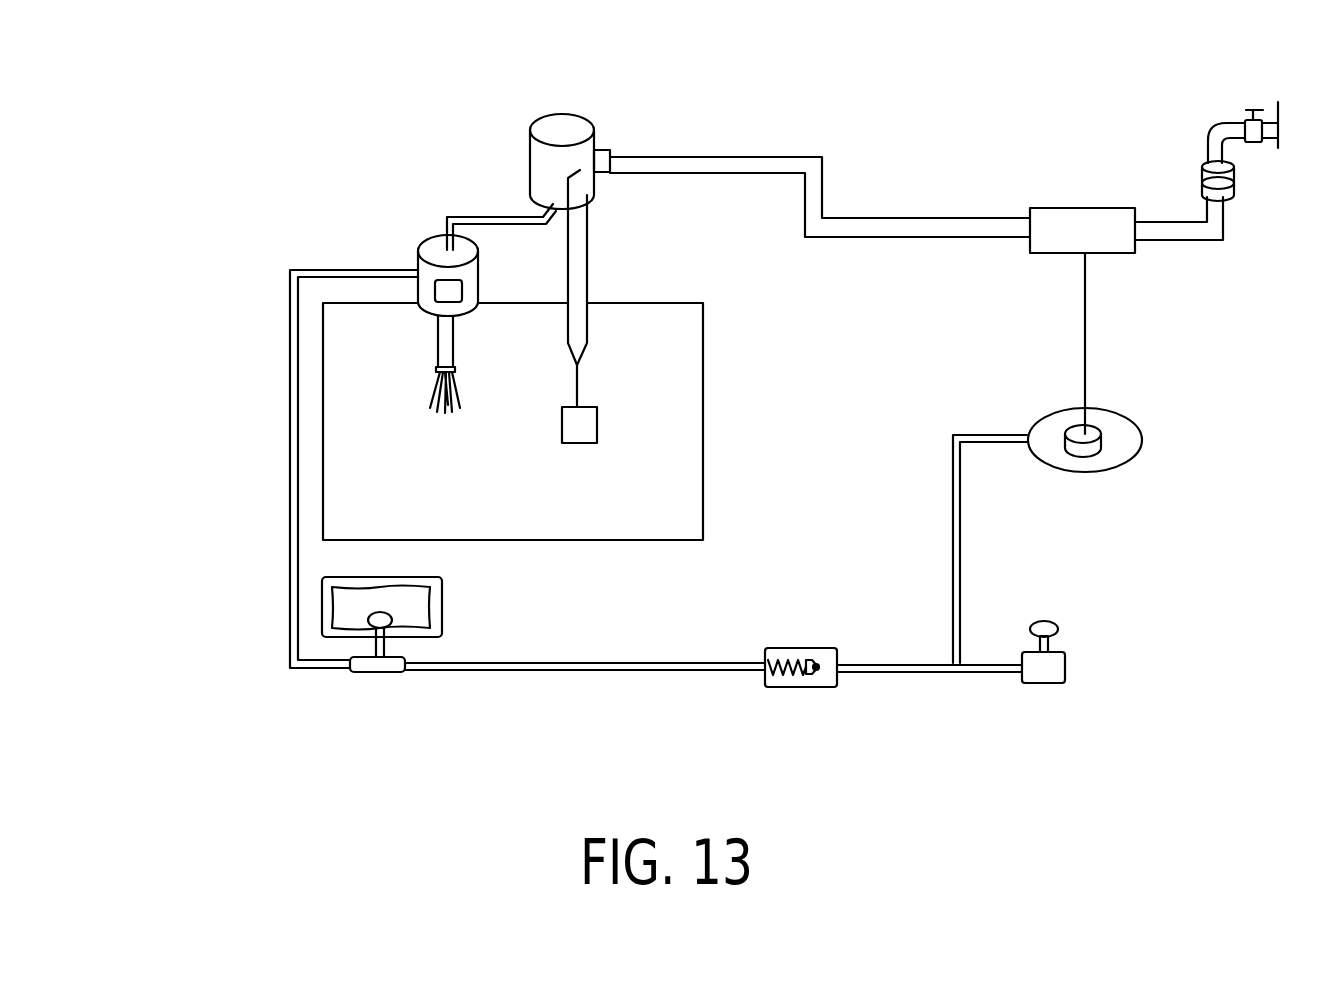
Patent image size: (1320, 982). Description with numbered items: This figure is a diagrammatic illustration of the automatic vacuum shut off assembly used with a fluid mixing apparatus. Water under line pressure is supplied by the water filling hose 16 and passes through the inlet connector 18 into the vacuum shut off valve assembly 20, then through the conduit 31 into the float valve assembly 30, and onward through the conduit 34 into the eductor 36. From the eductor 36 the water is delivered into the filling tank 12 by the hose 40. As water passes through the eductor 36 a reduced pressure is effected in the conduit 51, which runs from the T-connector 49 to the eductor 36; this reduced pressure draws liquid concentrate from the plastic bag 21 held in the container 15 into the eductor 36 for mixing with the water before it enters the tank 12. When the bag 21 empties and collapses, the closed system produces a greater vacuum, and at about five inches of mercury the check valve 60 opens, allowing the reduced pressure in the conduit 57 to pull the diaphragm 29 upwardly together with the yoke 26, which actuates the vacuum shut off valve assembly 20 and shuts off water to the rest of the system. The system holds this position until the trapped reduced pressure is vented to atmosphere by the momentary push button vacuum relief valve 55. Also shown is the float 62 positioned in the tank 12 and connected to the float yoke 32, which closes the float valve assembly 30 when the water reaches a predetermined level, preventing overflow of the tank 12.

The filling tank 12 is at (685, 333).
The container 15 is at (442, 603).
The water filling hose 16 is at (1213, 128).
The inlet connector 18 is at (1226, 232).
The vacuum shut off valve assembly 20 is at (1055, 208).
The plastic bag 21 is at (332, 608).
The yoke 26 is at (1090, 346).
The diaphragm 29 is at (1142, 442).
The float valve assembly 30 is at (572, 112).
The conduit 31 is at (823, 180).
The float yoke 32 is at (590, 248).
The conduit 34 is at (509, 214).
The eductor 36 is at (420, 244).
The hose 40 is at (438, 344).
The T-connector 49 is at (385, 673).
The conduit 51 is at (290, 363).
The vacuum relief valve 55 is at (1043, 684).
The conduit 57 is at (962, 585).
The check valve 60 is at (818, 688).
The float 62 is at (560, 433).